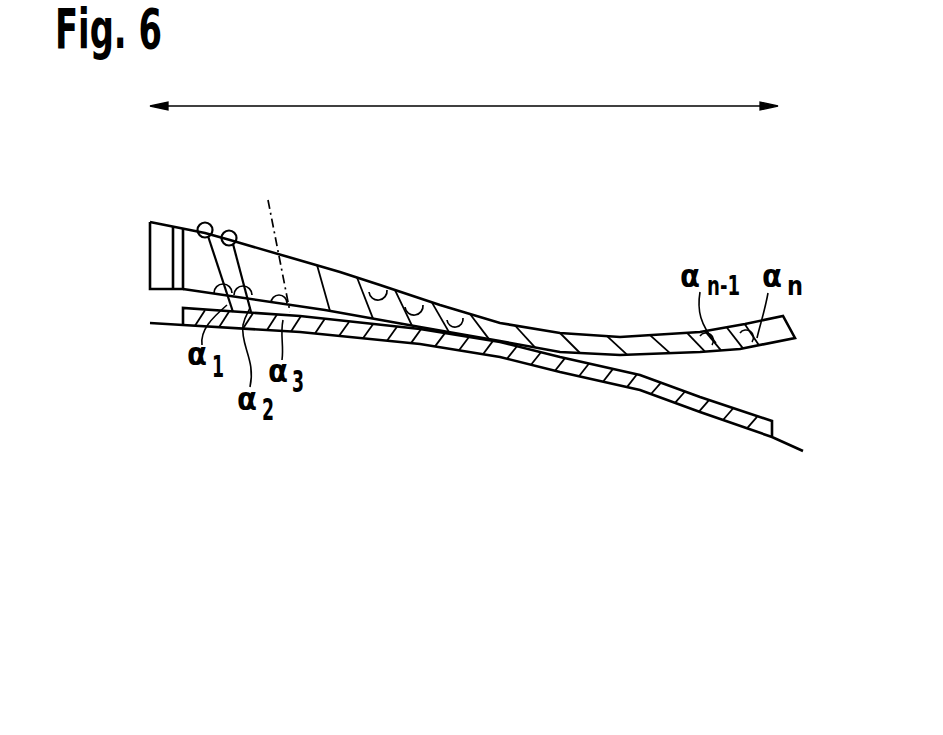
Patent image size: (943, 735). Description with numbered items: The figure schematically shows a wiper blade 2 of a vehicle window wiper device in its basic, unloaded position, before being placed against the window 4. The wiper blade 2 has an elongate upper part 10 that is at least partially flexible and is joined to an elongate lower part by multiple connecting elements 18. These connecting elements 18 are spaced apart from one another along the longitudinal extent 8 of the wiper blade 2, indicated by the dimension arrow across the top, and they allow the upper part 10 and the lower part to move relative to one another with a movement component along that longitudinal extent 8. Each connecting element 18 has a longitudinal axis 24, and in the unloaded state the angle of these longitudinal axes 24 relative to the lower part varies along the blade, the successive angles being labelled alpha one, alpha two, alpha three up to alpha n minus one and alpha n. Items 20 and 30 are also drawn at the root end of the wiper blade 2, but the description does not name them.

The wiper blade 2 is at (646, 255).
The window 4 is at (651, 398).
The longitudinal extent 8 is at (468, 106).
The upper part 10 is at (588, 331).
The connecting elements 18 is at (387, 290).
The pivot points 20 is at (205, 222).
The longitudinal axes 24 is at (275, 238).
The clamping block 30 is at (157, 263).